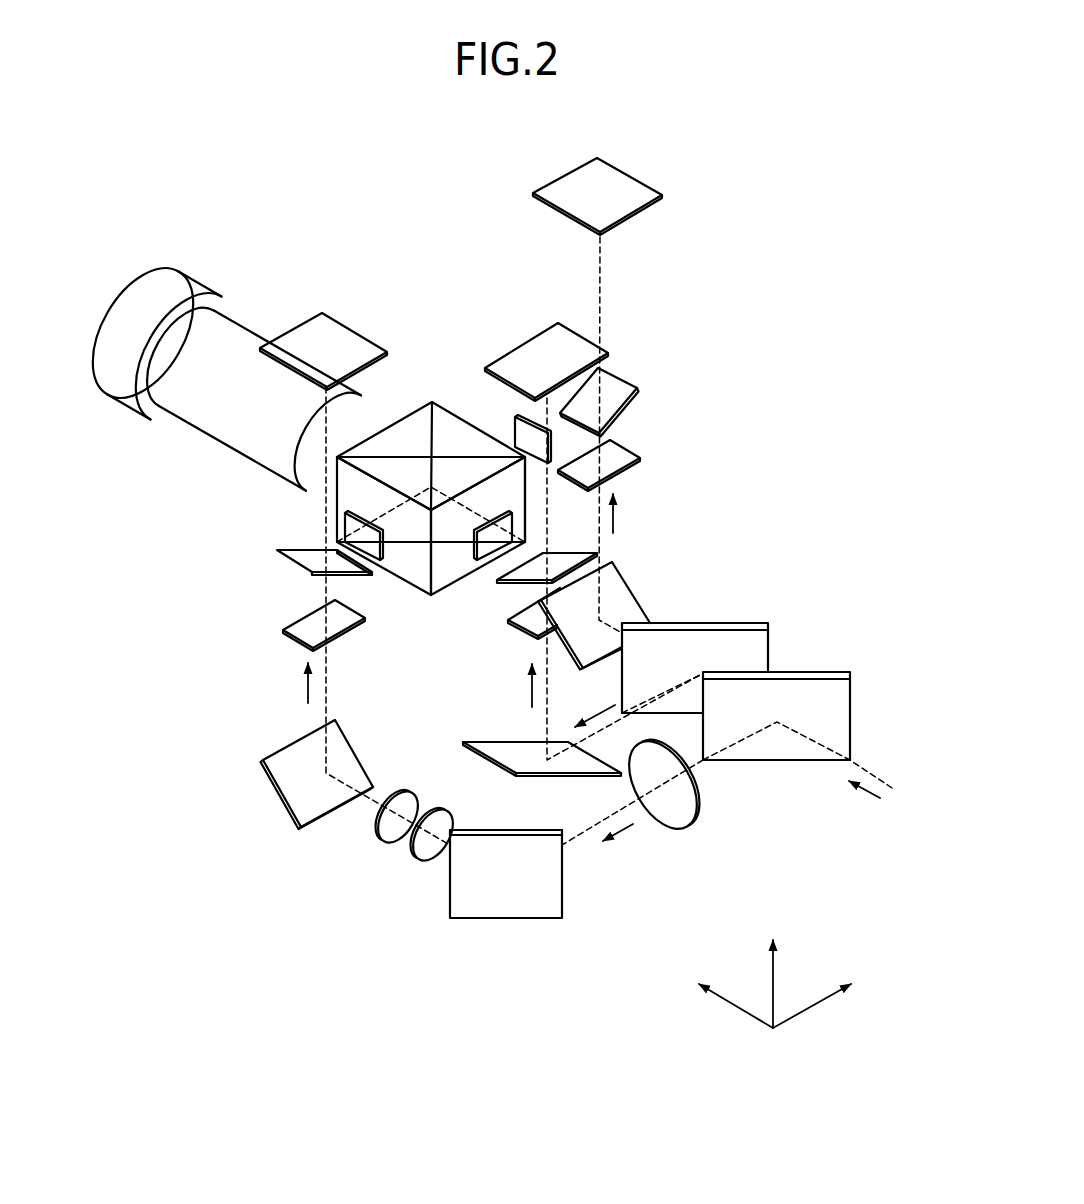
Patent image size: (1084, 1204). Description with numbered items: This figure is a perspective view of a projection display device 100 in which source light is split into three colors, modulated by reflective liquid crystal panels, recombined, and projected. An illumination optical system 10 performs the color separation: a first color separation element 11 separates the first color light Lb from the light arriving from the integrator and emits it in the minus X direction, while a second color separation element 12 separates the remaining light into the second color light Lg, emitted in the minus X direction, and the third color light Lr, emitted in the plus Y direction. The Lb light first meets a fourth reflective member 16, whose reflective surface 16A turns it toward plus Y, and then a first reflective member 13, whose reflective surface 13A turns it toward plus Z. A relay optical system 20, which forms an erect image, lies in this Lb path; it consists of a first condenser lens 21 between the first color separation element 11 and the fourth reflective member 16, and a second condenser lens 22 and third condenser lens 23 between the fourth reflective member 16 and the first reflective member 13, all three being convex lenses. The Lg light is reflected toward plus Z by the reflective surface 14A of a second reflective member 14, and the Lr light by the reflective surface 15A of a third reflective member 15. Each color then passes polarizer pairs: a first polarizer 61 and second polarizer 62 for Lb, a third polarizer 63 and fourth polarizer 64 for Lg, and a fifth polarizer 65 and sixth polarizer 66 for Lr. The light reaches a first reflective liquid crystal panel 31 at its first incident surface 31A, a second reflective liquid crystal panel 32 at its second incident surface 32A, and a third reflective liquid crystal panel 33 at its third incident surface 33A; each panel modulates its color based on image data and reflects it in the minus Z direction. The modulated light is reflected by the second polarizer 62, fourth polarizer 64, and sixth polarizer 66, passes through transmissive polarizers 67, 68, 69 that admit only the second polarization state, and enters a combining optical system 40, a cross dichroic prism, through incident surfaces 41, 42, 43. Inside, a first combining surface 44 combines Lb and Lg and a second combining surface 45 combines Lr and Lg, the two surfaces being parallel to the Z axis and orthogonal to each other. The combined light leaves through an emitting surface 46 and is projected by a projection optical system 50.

The projection display device 100 is at (764, 200).
The illumination optical system 10 is at (778, 536).
The first color separation element 11 is at (813, 672).
The second color separation element 12 is at (720, 623).
The first reflective member 13 is at (288, 747).
The reflective surface 13A is at (298, 788).
The second reflective member 14 is at (480, 742).
The reflective surface 14A is at (538, 768).
The third reflective member 15 is at (636, 600).
The reflective surface 15A is at (622, 582).
The fourth reflective member 16 is at (562, 887).
The reflective surface 16A is at (490, 830).
The relay optical system 20 is at (394, 855).
The first condenser lens 21 is at (659, 824).
The second condenser lens 22 is at (436, 811).
The third condenser lens 23 is at (392, 794).
The first reflective liquid crystal panel 31 is at (357, 333).
The first incident surface 31A is at (374, 368).
The second reflective liquid crystal panel 32 is at (577, 334).
The second incident surface 32A is at (494, 384).
The third reflective liquid crystal panel 33 is at (632, 172).
The third incident surface 33A is at (633, 223).
The combining optical system 40 is at (448, 406).
The incident surface 41 is at (408, 563).
The incident surface 42 is at (455, 562).
The incident surface 43 is at (497, 440).
The first combining surface 44 is at (433, 437).
The second combining surface 45 is at (397, 456).
The emitting surface 46 is at (383, 429).
The projection optical system 50 is at (209, 280).
The first polarizer 61 is at (296, 623).
The second polarizer 62 is at (292, 550).
The third polarizer 63 is at (522, 631).
The fourth polarizer 64 is at (568, 553).
The fifth polarizer 65 is at (623, 449).
The sixth polarizer 66 is at (615, 380).
The transmissive polarizer 67 is at (358, 514).
The transmissive polarizer 68 is at (477, 522).
The transmissive polarizer 69 is at (537, 459).